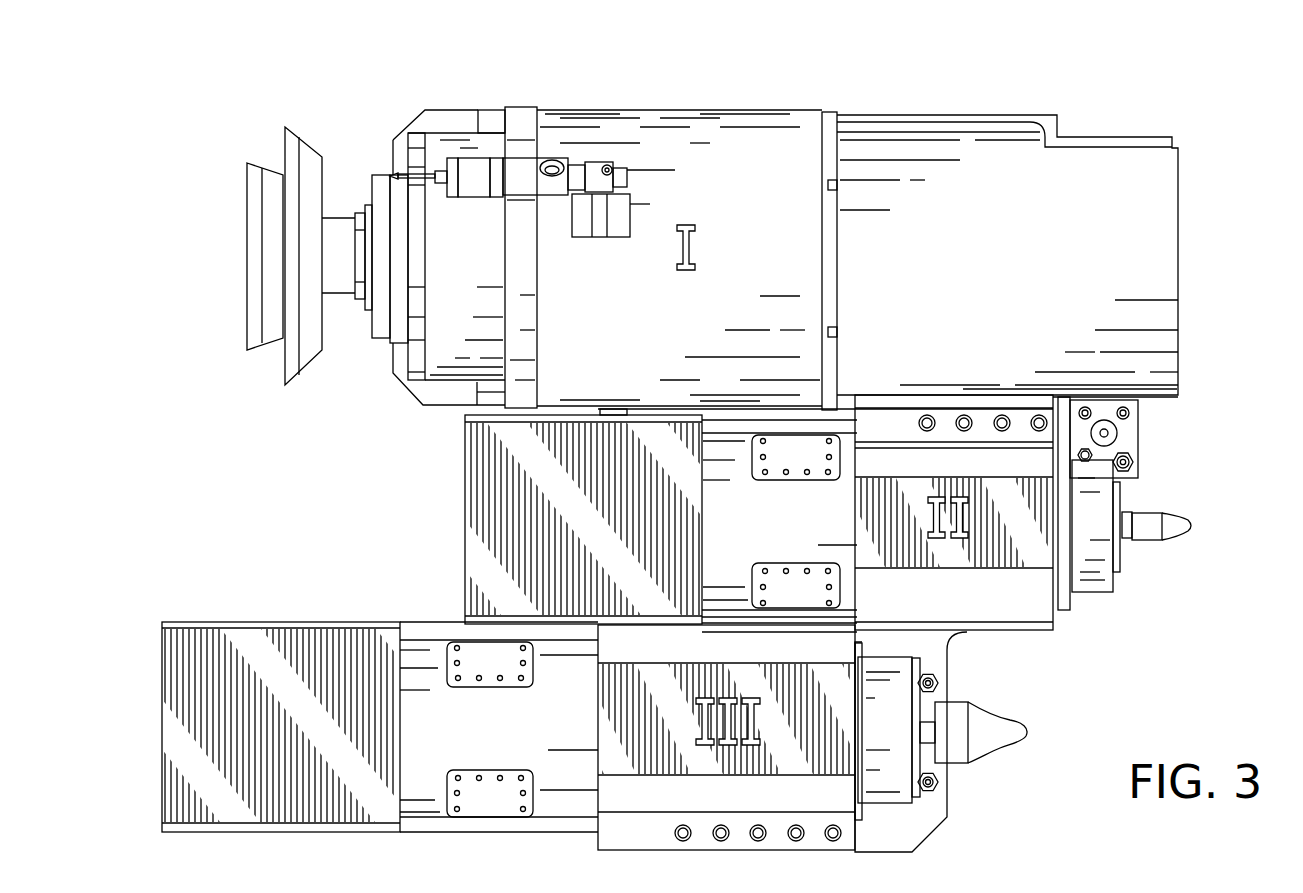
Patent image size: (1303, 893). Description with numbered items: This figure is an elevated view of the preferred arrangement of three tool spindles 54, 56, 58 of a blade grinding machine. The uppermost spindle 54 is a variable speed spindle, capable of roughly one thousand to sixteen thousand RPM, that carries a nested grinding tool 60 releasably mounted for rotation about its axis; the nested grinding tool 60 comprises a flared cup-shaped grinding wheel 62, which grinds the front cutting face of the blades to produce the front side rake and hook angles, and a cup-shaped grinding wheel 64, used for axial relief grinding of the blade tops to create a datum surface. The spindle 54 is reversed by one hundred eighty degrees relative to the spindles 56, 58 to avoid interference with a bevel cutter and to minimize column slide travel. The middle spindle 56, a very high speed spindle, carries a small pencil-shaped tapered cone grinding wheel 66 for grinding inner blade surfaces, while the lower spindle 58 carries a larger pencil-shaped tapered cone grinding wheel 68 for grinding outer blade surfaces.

The tool spindle 54 is at (1011, 248).
The tool spindle 56 is at (755, 538).
The tool spindle 58 is at (510, 737).
The nested grinding tool 60 is at (257, 132).
The flared cup-shaped grinding wheel 62 is at (295, 130).
The cup-shaped grinding wheel 64 is at (247, 207).
The pencil-shaped tapered cone grinding wheel 66 is at (1178, 518).
The pencil-shaped tapered cone grinding wheel 68 is at (1003, 752).